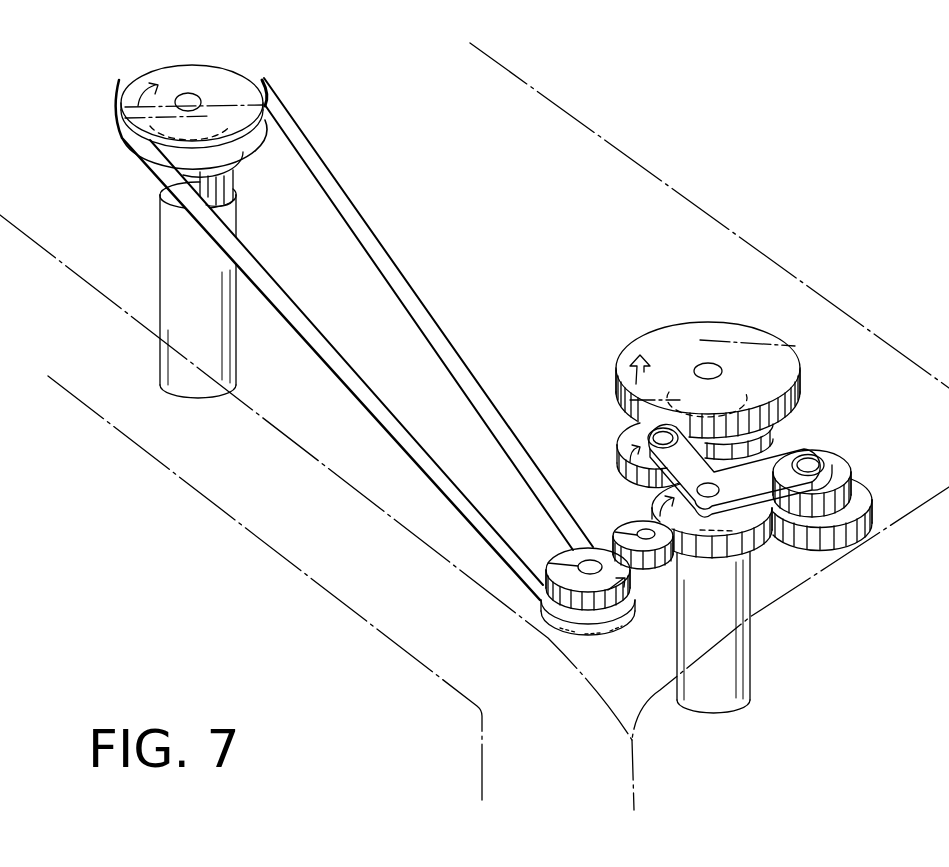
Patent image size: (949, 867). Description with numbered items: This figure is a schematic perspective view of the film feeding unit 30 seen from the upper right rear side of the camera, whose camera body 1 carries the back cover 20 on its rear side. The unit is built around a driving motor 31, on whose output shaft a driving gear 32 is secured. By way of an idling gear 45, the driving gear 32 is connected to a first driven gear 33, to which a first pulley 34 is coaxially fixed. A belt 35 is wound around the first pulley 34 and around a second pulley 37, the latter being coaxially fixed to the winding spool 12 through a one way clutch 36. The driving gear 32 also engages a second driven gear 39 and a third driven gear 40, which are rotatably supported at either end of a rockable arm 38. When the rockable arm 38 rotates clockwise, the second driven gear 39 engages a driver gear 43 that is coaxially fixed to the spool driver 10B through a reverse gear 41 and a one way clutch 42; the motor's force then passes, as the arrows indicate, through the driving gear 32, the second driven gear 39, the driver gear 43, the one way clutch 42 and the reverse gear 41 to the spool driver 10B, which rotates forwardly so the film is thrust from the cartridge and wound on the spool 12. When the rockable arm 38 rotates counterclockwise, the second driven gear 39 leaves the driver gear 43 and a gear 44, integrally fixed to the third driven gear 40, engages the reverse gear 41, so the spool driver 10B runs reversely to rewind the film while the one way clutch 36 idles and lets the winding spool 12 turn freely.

The camera body 1 is at (596, 128).
The spool driver 10B is at (780, 448).
The winding spool 12 is at (173, 258).
The back cover 20 is at (258, 537).
The film feeding unit 30 is at (672, 217).
The driving motor 31 is at (750, 680).
The driving gear 32 is at (753, 592).
The first driven gear 33 is at (616, 620).
The first pulley 34 is at (587, 638).
The belt 35 is at (418, 315).
The one way clutch 36 is at (230, 180).
The second pulley 37 is at (238, 50).
The rockable arm 38 is at (862, 517).
The second driven gear 39 is at (630, 427).
The third driven gear 40 is at (846, 464).
The reverse gear 41 is at (742, 420).
The one way clutch 42 is at (657, 359).
The driver gear 43 is at (741, 305).
The gear 44 is at (853, 538).
The idling gear 45 is at (632, 524).